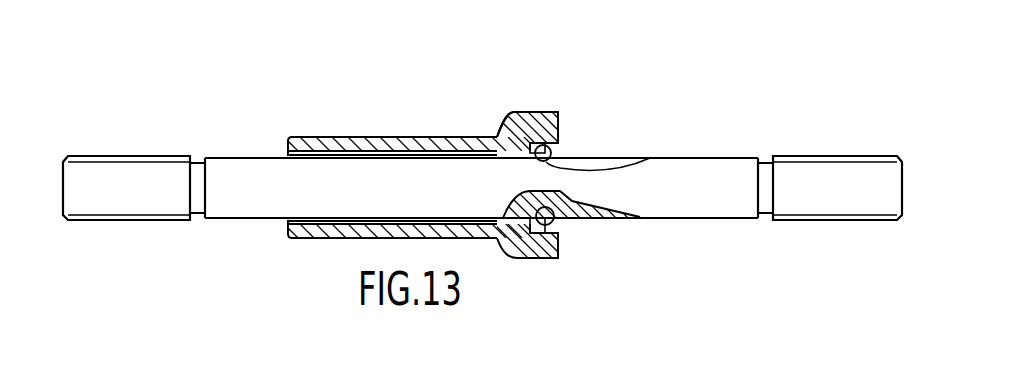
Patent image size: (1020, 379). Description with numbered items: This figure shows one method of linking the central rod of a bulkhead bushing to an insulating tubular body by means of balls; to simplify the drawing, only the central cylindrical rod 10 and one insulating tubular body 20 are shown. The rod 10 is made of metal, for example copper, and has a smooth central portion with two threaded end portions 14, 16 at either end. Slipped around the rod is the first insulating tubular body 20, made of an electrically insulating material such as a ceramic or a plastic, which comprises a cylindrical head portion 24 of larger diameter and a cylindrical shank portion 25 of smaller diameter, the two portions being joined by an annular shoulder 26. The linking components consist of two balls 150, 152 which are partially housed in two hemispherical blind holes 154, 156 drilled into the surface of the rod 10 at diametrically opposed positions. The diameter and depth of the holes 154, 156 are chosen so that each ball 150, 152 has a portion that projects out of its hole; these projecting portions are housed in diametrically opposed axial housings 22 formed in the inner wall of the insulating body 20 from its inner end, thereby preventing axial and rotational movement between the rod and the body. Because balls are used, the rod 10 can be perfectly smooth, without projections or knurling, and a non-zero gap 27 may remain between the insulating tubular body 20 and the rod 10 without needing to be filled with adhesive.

The cylindrical rod 10 is at (243, 190).
The threaded end portion 14 is at (113, 175).
The threaded end portion 16 is at (847, 173).
The first insulating tubular body 20 is at (510, 162).
The axial housing 22 is at (557, 147).
The head portion 24 is at (550, 128).
The shank portion 25 is at (312, 137).
The annular shoulder 26 is at (502, 128).
The gap 27 is at (350, 137).
The ball 150 is at (539, 145).
The ball 152 is at (546, 232).
The hemispherical blind hole 154 is at (650, 158).
The hemispherical blind hole 156 is at (600, 205).